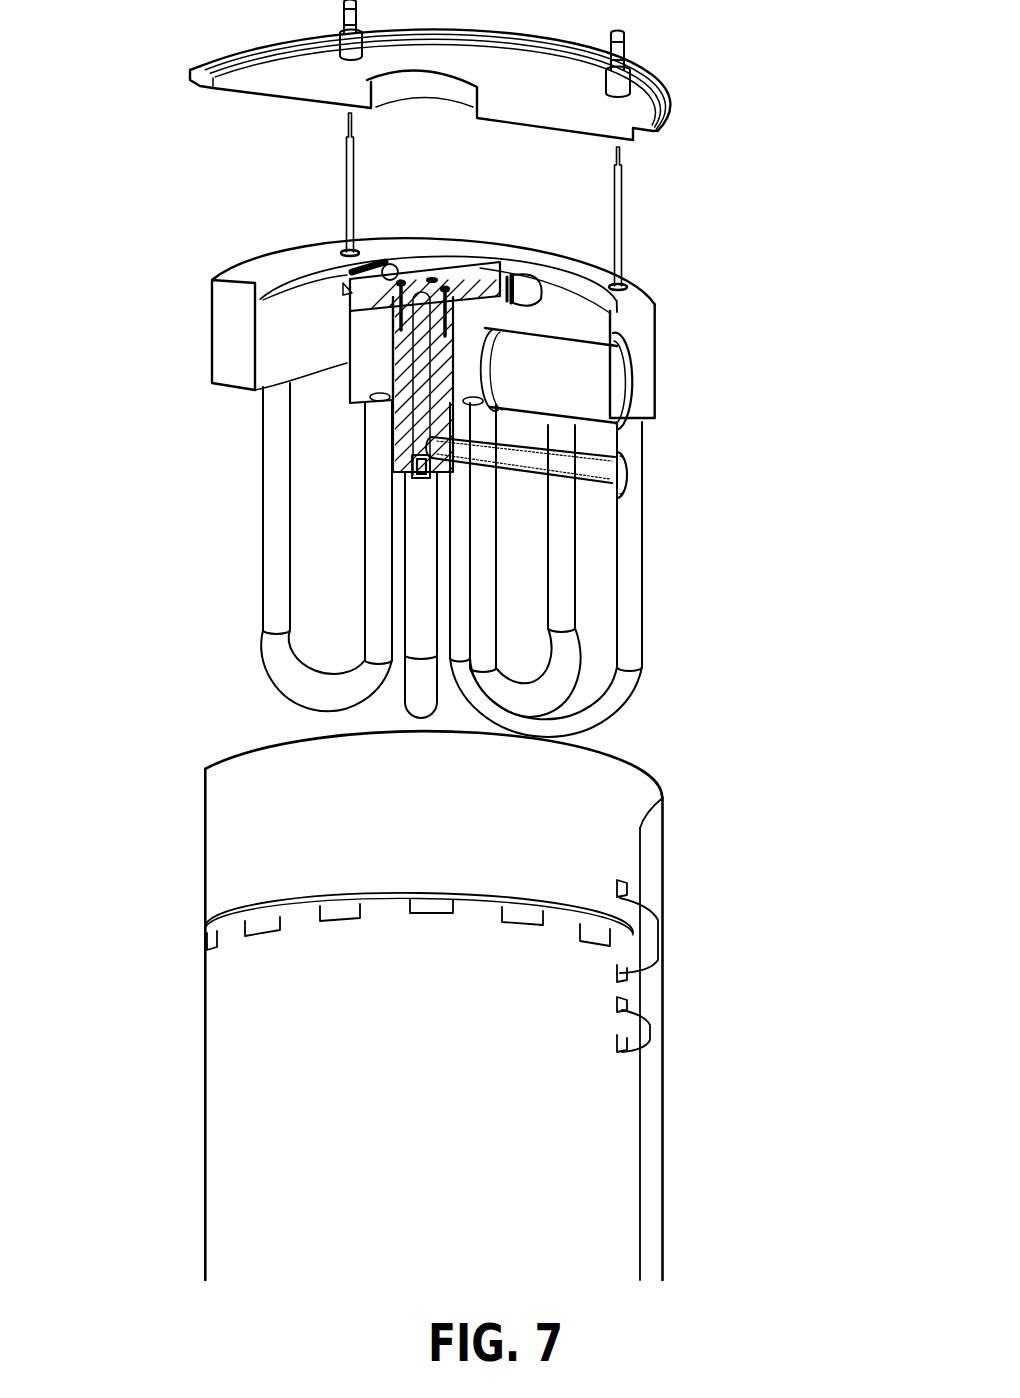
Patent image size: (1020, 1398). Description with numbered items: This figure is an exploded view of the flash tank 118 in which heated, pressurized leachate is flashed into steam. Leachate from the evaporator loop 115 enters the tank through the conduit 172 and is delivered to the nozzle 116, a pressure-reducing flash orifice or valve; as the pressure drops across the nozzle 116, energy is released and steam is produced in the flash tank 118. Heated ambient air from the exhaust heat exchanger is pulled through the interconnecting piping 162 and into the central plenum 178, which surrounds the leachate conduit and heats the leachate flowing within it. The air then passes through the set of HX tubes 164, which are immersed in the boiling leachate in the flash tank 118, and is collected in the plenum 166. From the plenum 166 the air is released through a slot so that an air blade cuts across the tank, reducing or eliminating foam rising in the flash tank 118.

The evaporator loop 115 is at (625, 483).
The nozzle 116 is at (528, 280).
The flash tank 118 is at (199, 1049).
The interconnecting piping 162 is at (638, 380).
The HX tubes 164 is at (645, 587).
The plenum 166 is at (655, 299).
The conduit 172 is at (585, 487).
The central plenum 178 is at (363, 372).